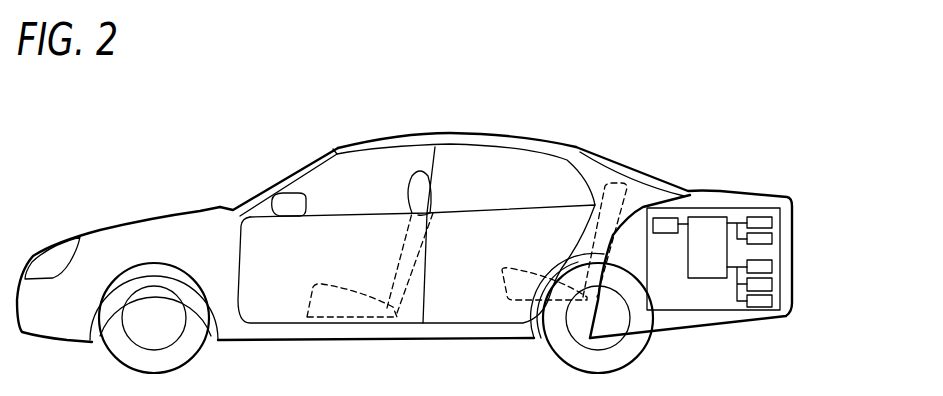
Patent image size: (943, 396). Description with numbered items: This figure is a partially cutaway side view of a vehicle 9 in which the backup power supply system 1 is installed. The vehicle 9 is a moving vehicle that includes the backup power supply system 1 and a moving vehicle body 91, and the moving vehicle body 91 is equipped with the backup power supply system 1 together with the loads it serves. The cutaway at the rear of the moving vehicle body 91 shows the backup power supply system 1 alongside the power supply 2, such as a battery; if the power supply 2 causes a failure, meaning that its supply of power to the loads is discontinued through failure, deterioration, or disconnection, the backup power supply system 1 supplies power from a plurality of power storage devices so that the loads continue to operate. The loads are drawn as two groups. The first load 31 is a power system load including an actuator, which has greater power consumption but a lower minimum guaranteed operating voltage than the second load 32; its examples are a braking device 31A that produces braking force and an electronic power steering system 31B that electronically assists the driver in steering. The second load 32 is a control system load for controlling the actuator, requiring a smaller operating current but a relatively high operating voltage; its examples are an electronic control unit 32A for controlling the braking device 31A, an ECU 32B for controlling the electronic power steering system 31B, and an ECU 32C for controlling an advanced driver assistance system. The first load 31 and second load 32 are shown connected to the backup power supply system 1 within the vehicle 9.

The vehicle 9 is at (623, 165).
The moving vehicle body 91 is at (505, 137).
The backup power supply system 1 is at (707, 222).
The power supply 2 is at (672, 234).
The first load 31 is at (818, 222).
The braking device 31A is at (772, 223).
The electronic power steering system 31B is at (772, 239).
The second load 32 is at (818, 292).
The electronic control unit for braking 32A is at (772, 266).
The ECU for controlling the electronic power steering system 32B is at (772, 284).
The ECU for controlling an advanced driver assistance system 32C is at (781, 310).